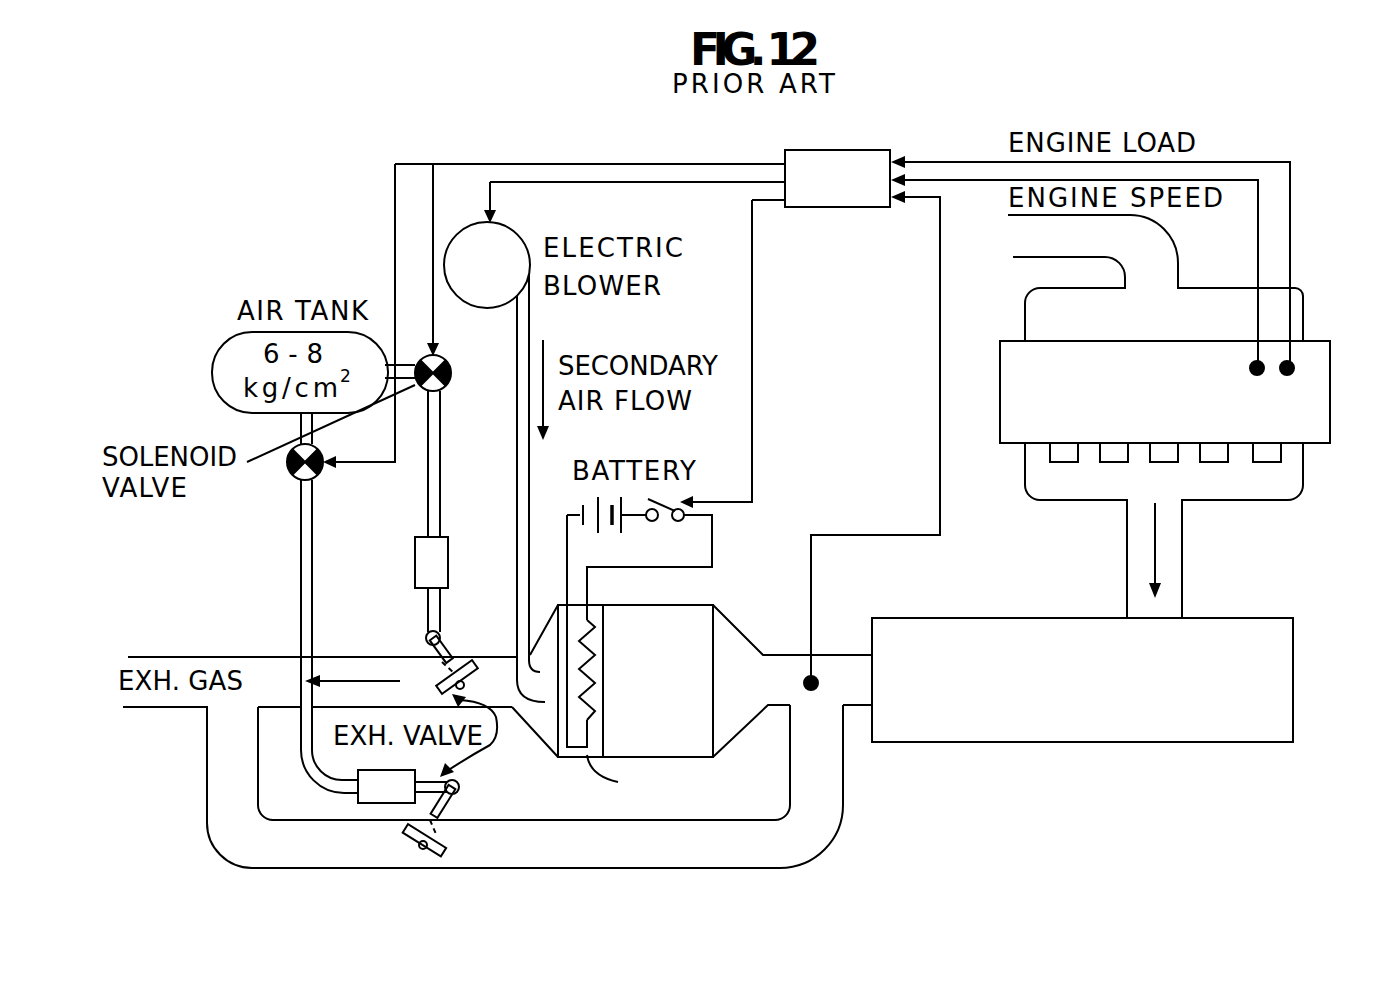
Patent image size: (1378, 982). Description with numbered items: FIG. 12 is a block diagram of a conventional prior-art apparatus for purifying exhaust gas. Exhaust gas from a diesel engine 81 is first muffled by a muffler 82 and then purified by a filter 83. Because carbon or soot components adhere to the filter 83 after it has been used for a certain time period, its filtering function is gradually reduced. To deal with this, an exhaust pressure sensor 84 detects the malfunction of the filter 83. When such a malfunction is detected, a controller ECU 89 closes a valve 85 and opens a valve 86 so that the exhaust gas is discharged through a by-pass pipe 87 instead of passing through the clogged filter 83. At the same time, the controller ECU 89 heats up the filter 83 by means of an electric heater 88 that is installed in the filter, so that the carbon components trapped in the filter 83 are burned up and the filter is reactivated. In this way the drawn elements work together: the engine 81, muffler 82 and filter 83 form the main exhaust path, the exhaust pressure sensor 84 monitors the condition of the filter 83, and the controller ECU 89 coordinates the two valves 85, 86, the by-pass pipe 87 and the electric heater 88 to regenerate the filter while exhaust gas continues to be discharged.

The diesel engine 81 is at (1316, 364).
The muffler 82 is at (1283, 633).
The filter 83 is at (710, 637).
The exhaust pressure sensor 84 is at (815, 678).
The valve 85 is at (449, 650).
The valve 86 is at (458, 803).
The by-pass pipe 87 is at (823, 825).
The electric heater 88 is at (593, 627).
The controller ECU 89 is at (842, 149).